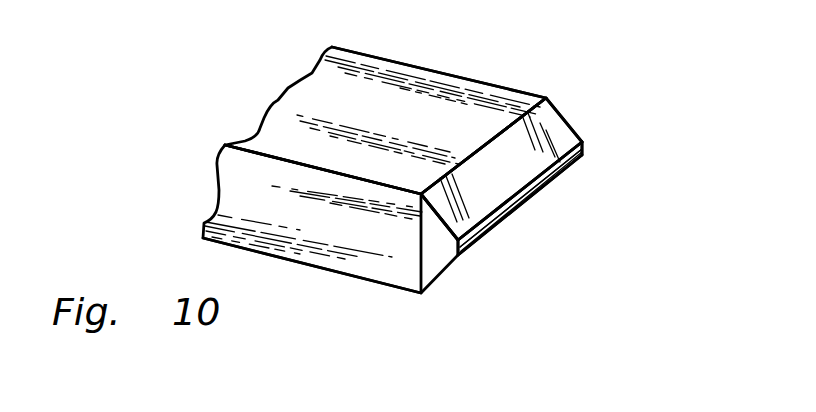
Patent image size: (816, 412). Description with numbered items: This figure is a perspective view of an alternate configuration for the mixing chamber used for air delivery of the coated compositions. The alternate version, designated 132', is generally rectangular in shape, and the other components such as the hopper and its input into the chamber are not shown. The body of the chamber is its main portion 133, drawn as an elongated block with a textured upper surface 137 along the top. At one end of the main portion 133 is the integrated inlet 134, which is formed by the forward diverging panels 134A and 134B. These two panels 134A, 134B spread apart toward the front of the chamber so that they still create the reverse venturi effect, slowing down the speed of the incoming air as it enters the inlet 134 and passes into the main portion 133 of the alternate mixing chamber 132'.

The alternate rectangular mixing chamber 132' is at (416, 159).
The top surface of block 137 is at (302, 128).
The main portion 133 is at (257, 230).
The forward diverging panel 134A is at (548, 143).
The forward diverging panel 134B is at (527, 210).
The integrated inlet 134 is at (488, 230).